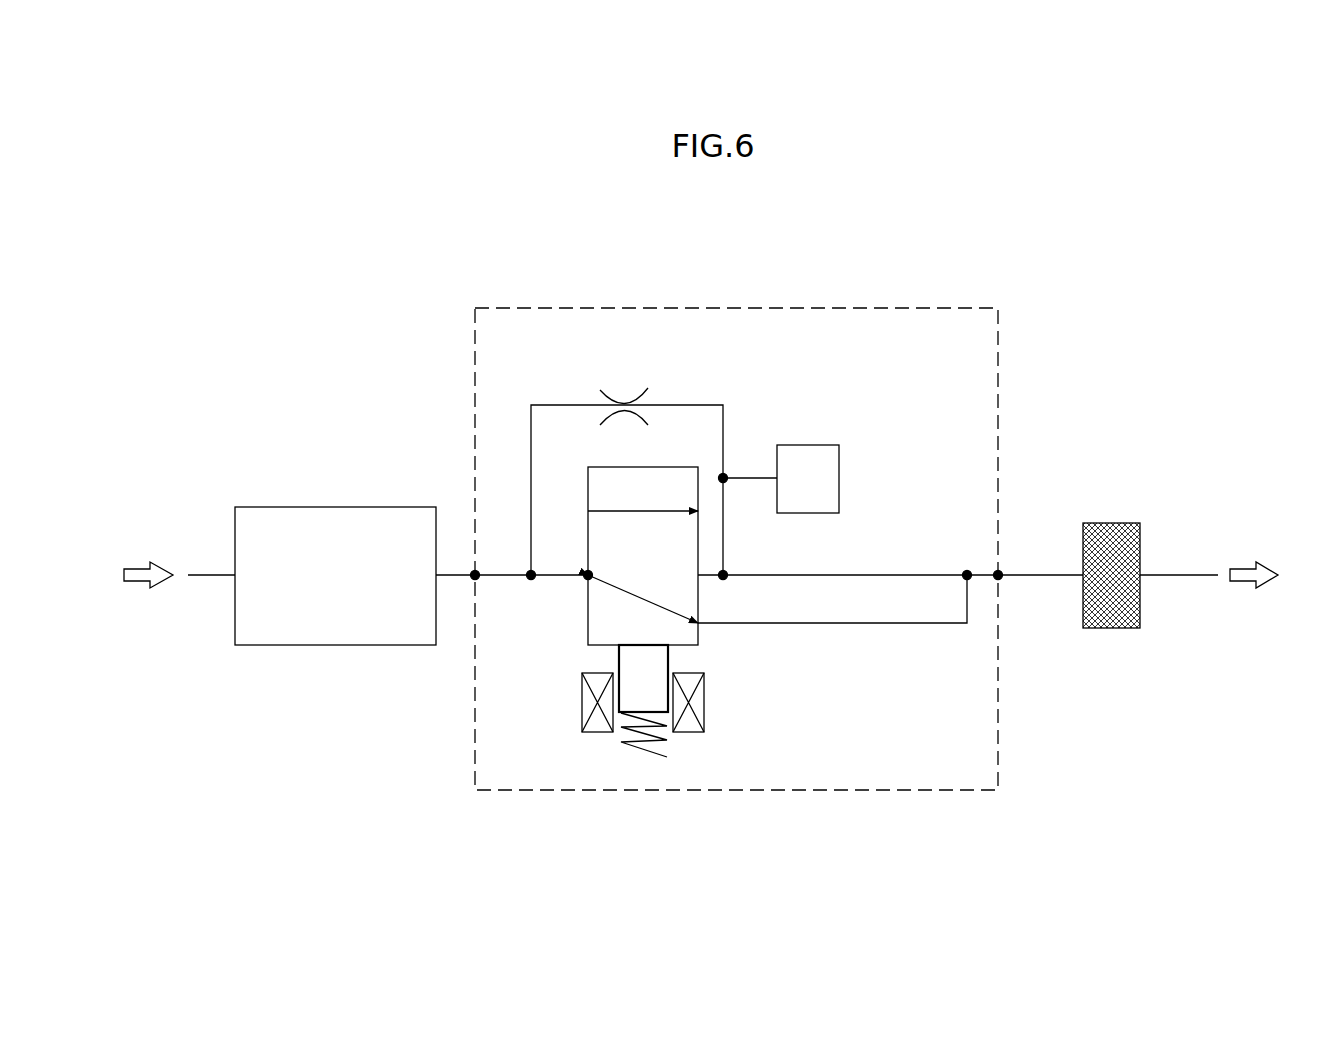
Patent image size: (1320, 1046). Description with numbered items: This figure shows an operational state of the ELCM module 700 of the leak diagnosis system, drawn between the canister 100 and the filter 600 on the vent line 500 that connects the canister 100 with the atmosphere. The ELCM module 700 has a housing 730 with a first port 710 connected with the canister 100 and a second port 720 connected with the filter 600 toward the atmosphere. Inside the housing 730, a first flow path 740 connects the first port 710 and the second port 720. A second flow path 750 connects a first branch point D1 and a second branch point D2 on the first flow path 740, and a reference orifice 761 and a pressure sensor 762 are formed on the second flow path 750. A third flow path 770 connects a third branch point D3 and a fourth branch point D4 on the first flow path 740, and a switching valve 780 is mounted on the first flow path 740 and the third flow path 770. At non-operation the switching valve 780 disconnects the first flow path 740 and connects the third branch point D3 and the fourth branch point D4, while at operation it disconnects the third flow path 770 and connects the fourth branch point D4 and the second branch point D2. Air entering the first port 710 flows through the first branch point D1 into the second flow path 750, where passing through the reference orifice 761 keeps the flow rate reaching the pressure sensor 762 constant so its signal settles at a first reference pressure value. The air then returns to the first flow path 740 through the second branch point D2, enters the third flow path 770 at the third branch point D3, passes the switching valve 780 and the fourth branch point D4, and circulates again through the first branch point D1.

The canister 100 is at (337, 507).
The vent line 500 is at (1180, 578).
The filter 600 is at (1111, 523).
The ELCM module 700 is at (727, 307).
The first port 710 is at (475, 575).
The second port 720 is at (998, 575).
The housing 730 is at (838, 307).
The first flow path 740 is at (881, 575).
The second flow path 750 is at (531, 452).
The reference orifice 761 is at (600, 390).
The pressure sensor 762 is at (839, 476).
The third flow path 770 is at (826, 623).
The switching valve 780 is at (588, 623).
The first branch point D1 is at (531, 575).
The second branch point D2 is at (723, 575).
The third branch point D3 is at (967, 575).
The fourth branch point D4 is at (588, 575).